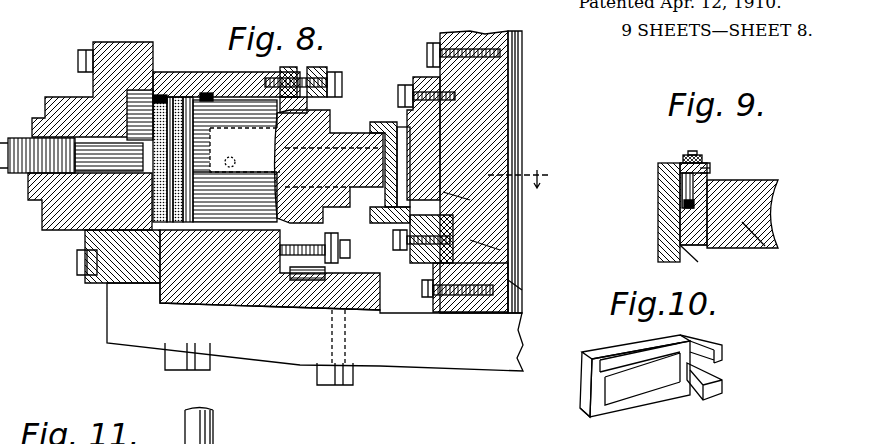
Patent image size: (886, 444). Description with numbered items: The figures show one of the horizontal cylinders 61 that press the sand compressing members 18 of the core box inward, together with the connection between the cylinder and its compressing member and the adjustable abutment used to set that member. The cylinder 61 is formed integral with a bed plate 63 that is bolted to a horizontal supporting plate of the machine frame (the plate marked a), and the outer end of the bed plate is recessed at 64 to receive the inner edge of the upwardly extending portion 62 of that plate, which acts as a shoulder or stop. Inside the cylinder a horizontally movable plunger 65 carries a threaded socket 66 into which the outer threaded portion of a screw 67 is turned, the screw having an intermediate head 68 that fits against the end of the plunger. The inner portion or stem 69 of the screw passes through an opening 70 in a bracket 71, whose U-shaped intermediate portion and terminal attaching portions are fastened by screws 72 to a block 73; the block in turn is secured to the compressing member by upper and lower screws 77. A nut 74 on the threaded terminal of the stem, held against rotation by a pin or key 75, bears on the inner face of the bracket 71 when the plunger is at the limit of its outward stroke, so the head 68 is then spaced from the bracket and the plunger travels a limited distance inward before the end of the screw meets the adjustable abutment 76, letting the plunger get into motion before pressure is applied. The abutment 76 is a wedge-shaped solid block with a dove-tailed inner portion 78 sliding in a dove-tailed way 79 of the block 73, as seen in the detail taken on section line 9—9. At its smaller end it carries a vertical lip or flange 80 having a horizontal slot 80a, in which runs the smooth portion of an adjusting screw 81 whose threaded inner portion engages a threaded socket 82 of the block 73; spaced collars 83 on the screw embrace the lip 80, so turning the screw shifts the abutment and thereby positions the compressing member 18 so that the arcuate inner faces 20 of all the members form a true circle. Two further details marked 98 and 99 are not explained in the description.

In FIG. 8, the bed plate a is at (402, 362).
In FIG. 8, the upwardly extending portion 62 is at (127, 290).
In FIG. 8, the bed plate 63 is at (254, 297).
In FIG. 8, the recess 64 is at (160, 296).
In FIG. 8, the horizontal cylinder 61 is at (215, 86).
In FIG. 8, the packing 99 is at (152, 218).
In FIG. 8, the plunger 65 is at (236, 161).
In FIG. 8, the port 98 is at (247, 156).
In FIG. 8, the screw 67 is at (235, 180).
In FIG. 8, the head 68 is at (342, 135).
In FIG. 8, the opening 70 is at (378, 120).
In FIG. 8, the pin or key 75 is at (442, 145).
In FIG. 8, the inner portion 69 is at (388, 224).
In FIG. 8, the block 73 is at (508, 263).
In FIG. 9, the block 73 is at (690, 245).
In FIG. 8, the adjustable abutment 76 is at (515, 223).
In FIG. 9, the adjustable abutment 76 is at (664, 252).
In FIG. 10, the adjustable abutment 76 is at (579, 372).
In FIG. 8, the dove-tailed inner portion 78 is at (462, 157).
In FIG. 9, the dove-tailed inner portion 78 is at (690, 250).
In FIG. 10, the dove-tailed inner portion 78 is at (635, 376).
In FIG. 8, the nut 74 is at (520, 91).
In FIG. 8, the arcuate inner face 20 is at (516, 290).
In FIG. 9, the arcuate inner face 20 is at (768, 210).
In FIG. 8, the sand compressing member 18 is at (494, 243).
In FIG. 9, the sand compressing member 18 is at (757, 250).
In FIG. 8, the dove-tailed groove or way 79 is at (444, 192).
In FIG. 9, the dove-tailed groove or way 79 is at (695, 225).
In FIG. 8, the screws 72 is at (410, 83).
In FIG. 8, the upper and lower screws 77 is at (428, 50).
In FIG. 8, the bracket 71 is at (402, 280).
In FIG. 8, the threaded socket 66 is at (372, 208).
In FIG. 8, the section line 9— 9 is at (484, 178).
In FIG. 9, the threaded opening or socket 82 is at (688, 205).
In FIG. 9, the adjusting screw 81 is at (687, 152).
In FIG. 9, the collars or shoulders 83 is at (700, 158).
In FIG. 9, the lip or flange 80 is at (703, 163).
In FIG. 10, the lip or flange 80 is at (703, 342).
In FIG. 9, the slot or bifurcation 80a is at (708, 168).
In FIG. 10, the slot or bifurcation 80a is at (723, 370).